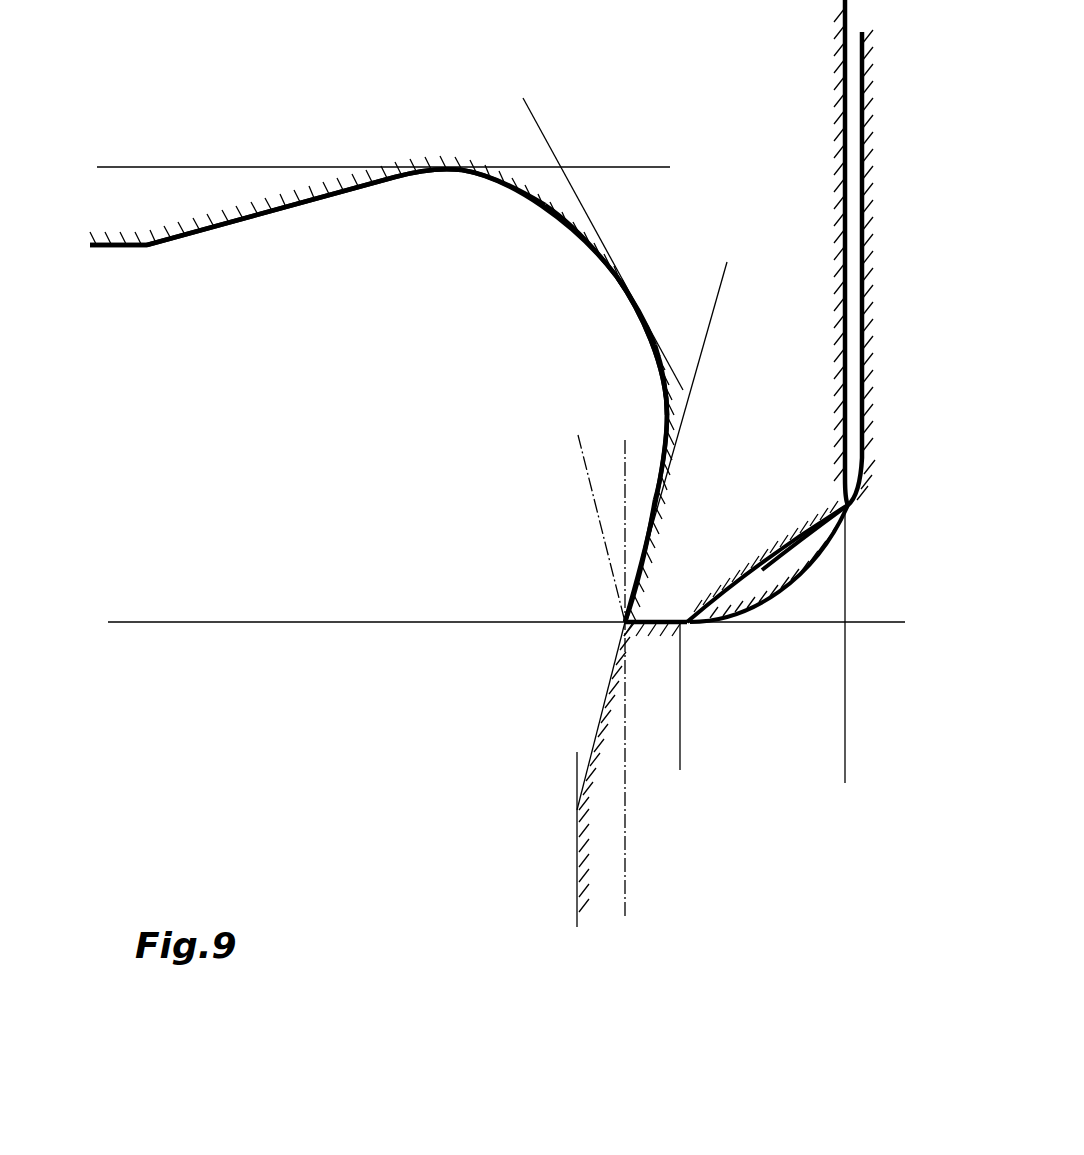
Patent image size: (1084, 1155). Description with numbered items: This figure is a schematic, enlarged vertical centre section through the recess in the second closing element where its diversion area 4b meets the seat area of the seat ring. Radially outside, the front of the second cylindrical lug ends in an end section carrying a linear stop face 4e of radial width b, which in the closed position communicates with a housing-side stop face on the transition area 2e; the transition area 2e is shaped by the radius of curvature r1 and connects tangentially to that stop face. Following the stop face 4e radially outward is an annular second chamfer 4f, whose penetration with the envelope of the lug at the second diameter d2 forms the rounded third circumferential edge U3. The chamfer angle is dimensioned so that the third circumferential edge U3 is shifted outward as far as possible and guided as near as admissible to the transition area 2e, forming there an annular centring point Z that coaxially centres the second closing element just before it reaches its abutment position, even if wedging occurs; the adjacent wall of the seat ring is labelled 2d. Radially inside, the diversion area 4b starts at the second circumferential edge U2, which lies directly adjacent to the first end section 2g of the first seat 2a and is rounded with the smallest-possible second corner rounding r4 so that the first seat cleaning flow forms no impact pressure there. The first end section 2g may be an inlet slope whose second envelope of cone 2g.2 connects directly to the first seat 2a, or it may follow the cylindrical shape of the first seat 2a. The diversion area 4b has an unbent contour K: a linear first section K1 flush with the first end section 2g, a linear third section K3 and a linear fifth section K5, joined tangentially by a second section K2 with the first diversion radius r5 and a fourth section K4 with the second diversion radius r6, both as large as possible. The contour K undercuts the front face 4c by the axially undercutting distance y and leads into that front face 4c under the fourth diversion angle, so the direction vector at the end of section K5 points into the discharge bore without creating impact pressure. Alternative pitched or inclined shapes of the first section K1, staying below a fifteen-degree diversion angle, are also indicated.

The contour K is at (550, 278).
The diversion area 4b is at (640, 338).
The front face 4c is at (113, 247).
The fifth section K5 is at (347, 191).
The fourth section K4 is at (460, 173).
The third section K3 is at (617, 279).
The second section K2 is at (662, 427).
The first section K1 is at (646, 530).
The second diversion radius r6 is at (473, 288).
The first diversion radius r5 is at (664, 403).
The second corner rounding r4 is at (630, 618).
The radius of curvature r1 is at (770, 592).
The axially undercutting distance y is at (132, 167).
The first end section 2g is at (605, 700).
The second envelope of cone 2g.2 is at (585, 775).
The first seat 2a is at (577, 875).
The second circumferential edge U2 is at (655, 650).
The stop face 4e is at (632, 625).
The second chamfer 4f is at (790, 550).
The transition area 2e is at (740, 613).
The workpiece wall 2d is at (860, 362).
The centring point Z is at (840, 501).
The third circumferential edge U3 is at (826, 516).
The width b is at (703, 760).
The second diameter d2 is at (845, 773).